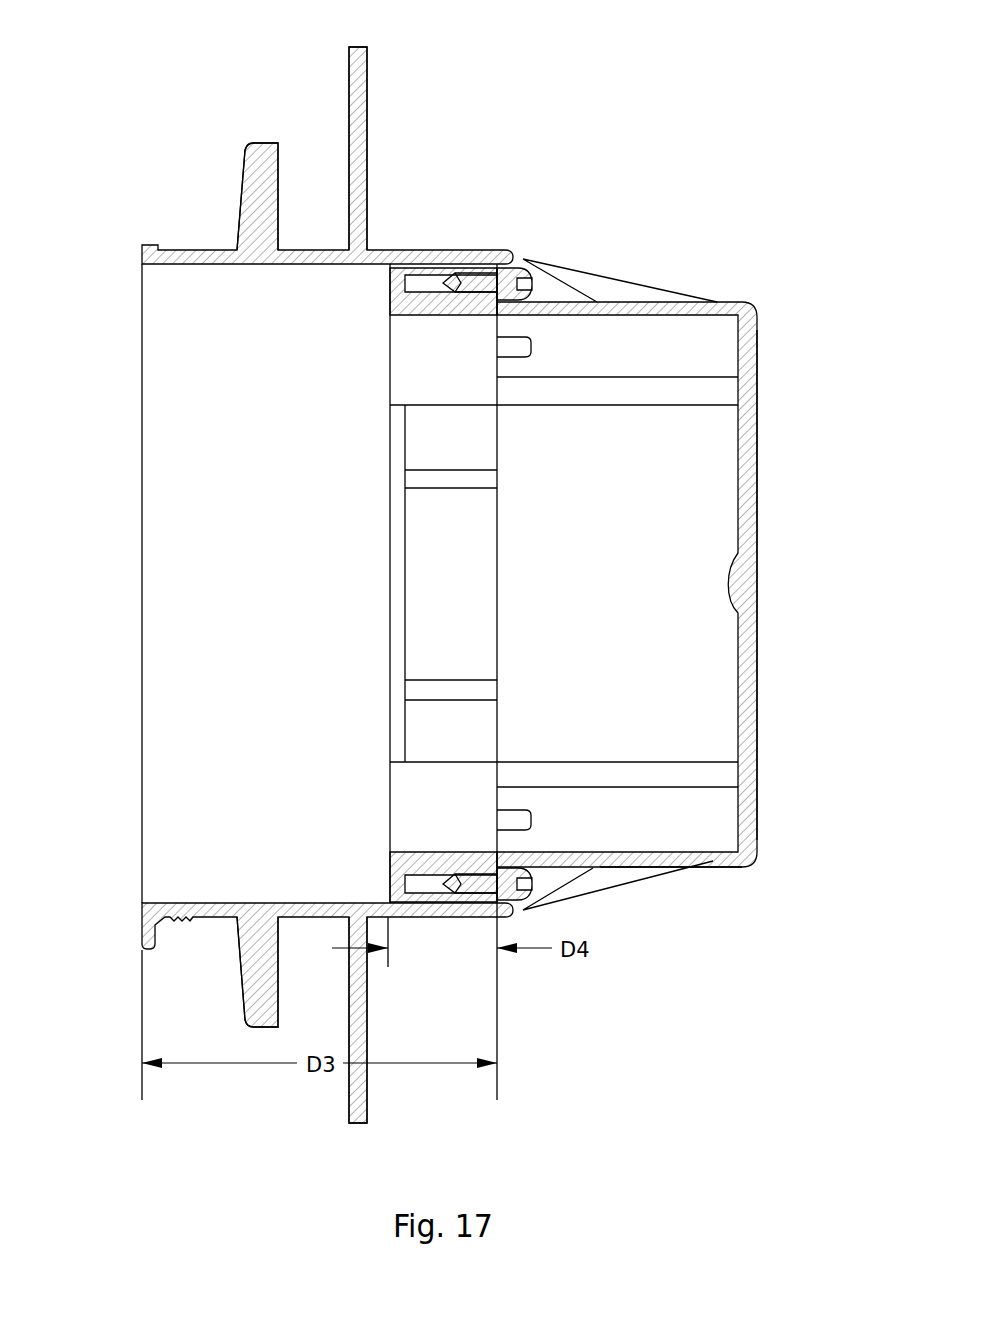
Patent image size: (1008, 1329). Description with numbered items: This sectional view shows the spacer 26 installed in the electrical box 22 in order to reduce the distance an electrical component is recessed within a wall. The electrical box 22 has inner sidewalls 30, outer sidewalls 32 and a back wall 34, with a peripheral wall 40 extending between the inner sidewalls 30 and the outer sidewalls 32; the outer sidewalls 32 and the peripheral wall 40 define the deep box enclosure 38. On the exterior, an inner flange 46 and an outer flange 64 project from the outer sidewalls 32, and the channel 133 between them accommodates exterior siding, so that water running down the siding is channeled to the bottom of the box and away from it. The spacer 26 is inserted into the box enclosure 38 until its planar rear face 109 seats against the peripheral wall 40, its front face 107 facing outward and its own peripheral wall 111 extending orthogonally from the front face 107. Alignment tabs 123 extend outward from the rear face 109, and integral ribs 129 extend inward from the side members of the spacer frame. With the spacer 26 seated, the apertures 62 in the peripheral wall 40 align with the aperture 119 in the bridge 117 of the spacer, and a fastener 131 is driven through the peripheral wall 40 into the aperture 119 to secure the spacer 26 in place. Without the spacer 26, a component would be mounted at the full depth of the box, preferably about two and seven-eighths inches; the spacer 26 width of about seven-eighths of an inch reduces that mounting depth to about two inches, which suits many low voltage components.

The electrical box 22 is at (748, 870).
The spacer 26 is at (433, 870).
The inner sidewalls 30 is at (672, 307).
The outer sidewalls 32 is at (318, 258).
The back wall 34 is at (750, 452).
The box enclosure 38 is at (212, 693).
The peripheral wall 40 is at (505, 303).
The inner flange 46 is at (360, 47).
The apertures 62 is at (523, 258).
The outer flange 64 is at (267, 143).
The front face 107 is at (388, 585).
The rear face 109 is at (500, 603).
The peripheral wall 111 is at (400, 492).
The bridge 117 is at (438, 302).
The aperture 119 is at (427, 282).
The alignment tab 123 is at (531, 347).
The integral ribs 129 is at (468, 480).
The fastener 131 is at (493, 283).
The channel 133 is at (316, 165).